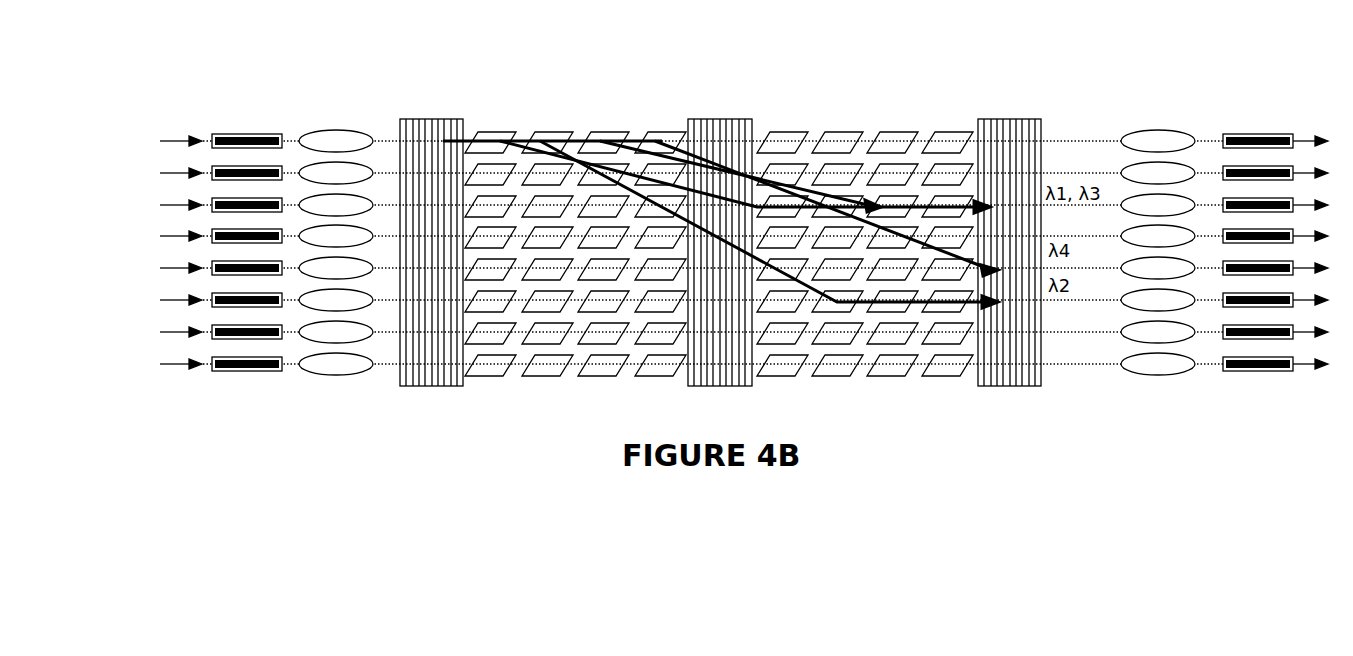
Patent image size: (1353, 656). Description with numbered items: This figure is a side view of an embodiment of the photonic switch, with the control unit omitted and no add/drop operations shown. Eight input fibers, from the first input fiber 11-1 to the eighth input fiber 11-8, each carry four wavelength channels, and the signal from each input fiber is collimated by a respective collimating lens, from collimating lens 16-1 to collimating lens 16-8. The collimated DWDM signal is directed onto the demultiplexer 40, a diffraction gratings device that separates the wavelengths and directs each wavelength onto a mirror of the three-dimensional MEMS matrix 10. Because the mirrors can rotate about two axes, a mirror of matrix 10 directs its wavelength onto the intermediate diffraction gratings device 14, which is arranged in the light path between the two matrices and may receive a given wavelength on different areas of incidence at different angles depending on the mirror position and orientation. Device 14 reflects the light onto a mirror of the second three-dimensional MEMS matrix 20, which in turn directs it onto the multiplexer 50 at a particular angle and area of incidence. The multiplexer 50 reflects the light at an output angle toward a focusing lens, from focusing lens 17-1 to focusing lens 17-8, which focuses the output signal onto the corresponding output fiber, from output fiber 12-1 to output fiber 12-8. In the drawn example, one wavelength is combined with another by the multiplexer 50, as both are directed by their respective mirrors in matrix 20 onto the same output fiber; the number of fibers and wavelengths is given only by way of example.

The input fiber 11-1 is at (247, 134).
The input fiber 11-8 is at (247, 371).
The collimating lens 16-1 is at (340, 131).
The collimating lens 16-8 is at (313, 375).
The demultiplexer 40 is at (417, 122).
The 3D-MEMS matrix 10 is at (582, 110).
The intermediate diffraction gratings device 14 is at (723, 120).
The 3D-MEMS matrix 20 is at (849, 88).
The multiplexer 50 is at (1005, 120).
The focusing lens 17-1 is at (1168, 131).
The focusing lens 17-8 is at (1128, 374).
The output fiber 12-1 is at (1253, 136).
The output fiber 12-8 is at (1235, 366).